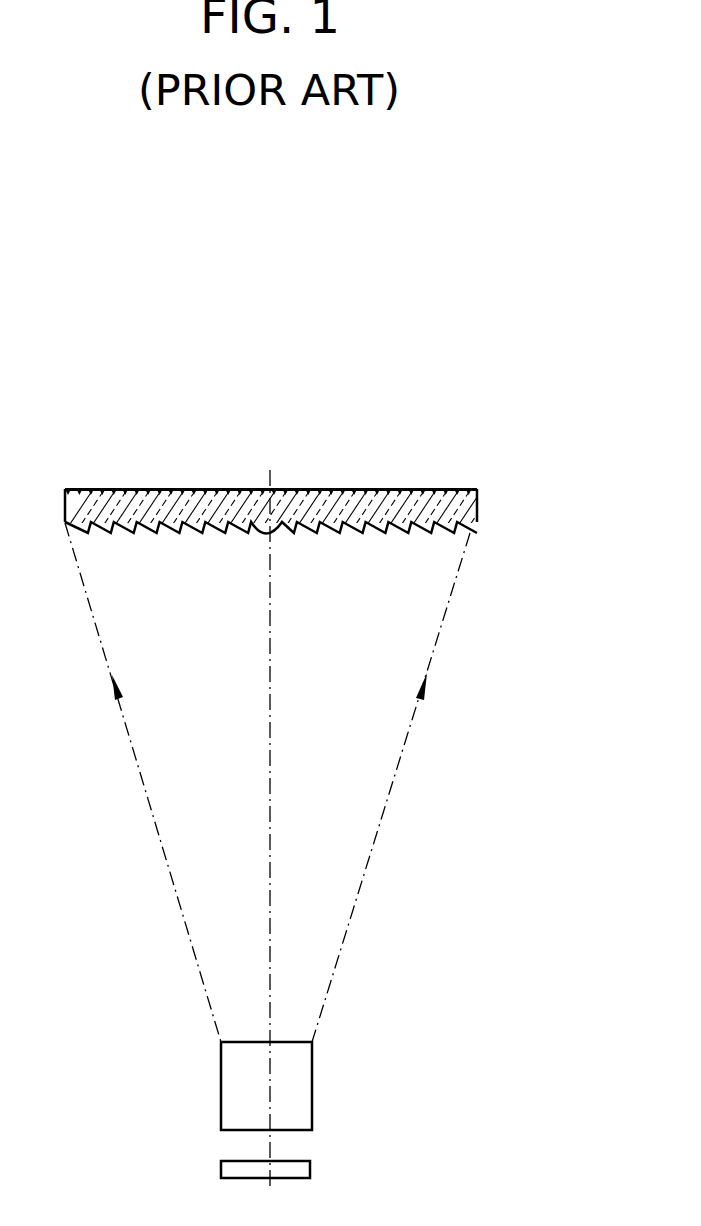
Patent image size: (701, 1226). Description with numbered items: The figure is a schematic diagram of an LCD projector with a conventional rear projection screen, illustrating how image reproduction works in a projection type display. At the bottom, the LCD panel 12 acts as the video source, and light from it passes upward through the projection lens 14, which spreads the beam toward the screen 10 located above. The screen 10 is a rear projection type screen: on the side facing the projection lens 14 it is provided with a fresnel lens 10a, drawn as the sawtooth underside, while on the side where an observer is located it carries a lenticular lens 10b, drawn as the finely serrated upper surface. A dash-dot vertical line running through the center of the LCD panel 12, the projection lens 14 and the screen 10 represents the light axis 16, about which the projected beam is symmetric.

The screen 10 is at (313, 517).
The fresnel lens 10a is at (393, 530).
The lenticular lens 10b is at (195, 488).
The LCD panel 12 is at (310, 1169).
The projection lens 14 is at (312, 1087).
The light axis 16 is at (275, 480).